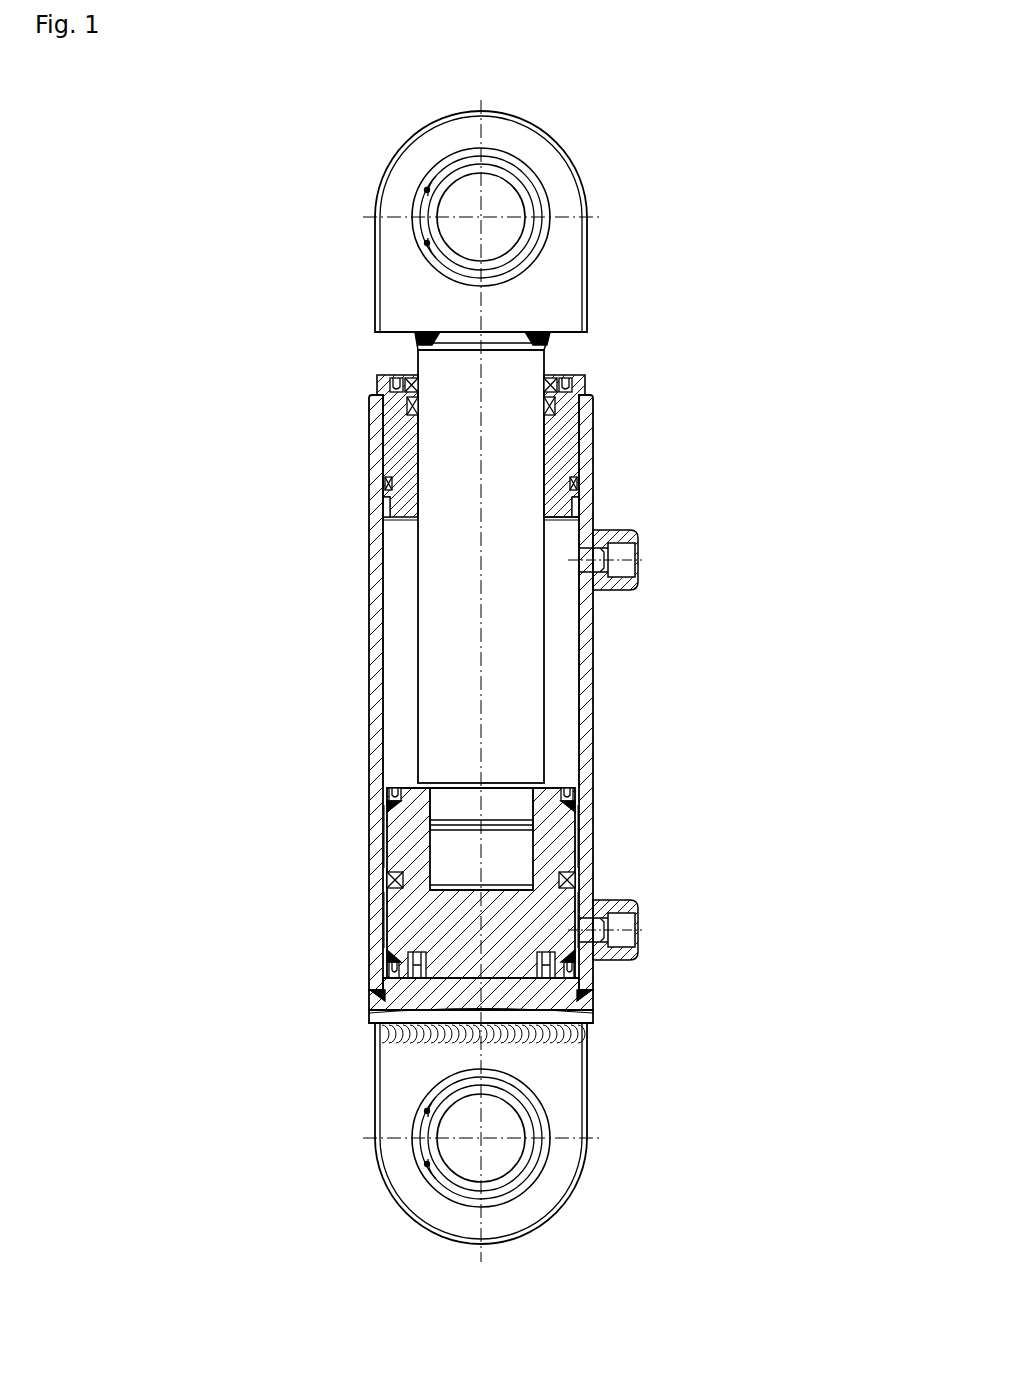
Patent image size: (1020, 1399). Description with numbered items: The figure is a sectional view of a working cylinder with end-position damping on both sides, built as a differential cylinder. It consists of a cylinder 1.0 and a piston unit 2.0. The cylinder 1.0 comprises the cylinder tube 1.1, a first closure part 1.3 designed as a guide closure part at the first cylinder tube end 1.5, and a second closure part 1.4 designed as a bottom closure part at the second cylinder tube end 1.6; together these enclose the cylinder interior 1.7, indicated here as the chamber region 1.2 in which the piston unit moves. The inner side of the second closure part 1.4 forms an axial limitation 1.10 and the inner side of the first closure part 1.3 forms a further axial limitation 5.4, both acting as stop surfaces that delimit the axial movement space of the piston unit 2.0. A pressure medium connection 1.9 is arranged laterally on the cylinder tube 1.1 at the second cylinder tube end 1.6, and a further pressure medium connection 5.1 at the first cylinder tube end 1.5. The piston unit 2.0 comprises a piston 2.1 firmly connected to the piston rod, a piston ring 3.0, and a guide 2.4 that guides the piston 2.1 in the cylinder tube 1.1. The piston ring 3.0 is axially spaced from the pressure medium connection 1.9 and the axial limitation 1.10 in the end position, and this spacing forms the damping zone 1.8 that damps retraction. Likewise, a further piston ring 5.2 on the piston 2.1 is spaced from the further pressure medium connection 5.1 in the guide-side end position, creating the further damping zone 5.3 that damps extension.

The cylinder 1.0 is at (297, 582).
The cylinder tube 1.1 is at (377, 648).
The cylinder chamber 1.2 is at (558, 705).
The first closure part 1.3 is at (400, 443).
The second closure part 1.4 is at (390, 1003).
The first cylinder tube end 1.5 is at (610, 408).
The second cylinder tube end 1.6 is at (602, 982).
The cylinder interior 1.7 is at (563, 640).
The damping zone 1.8 is at (355, 975).
The pressure medium connection 1.9 is at (630, 935).
The axial limitation 1.10 is at (503, 990).
The piston unit 2.0 is at (460, 795).
The piston 2.1 is at (420, 917).
The guide 2.4 is at (377, 872).
The piston ring 3.0 is at (570, 967).
The further pressure medium connection 5.1 is at (623, 560).
The further piston ring 5.2 is at (573, 798).
The further damping zone 5.3 is at (365, 562).
The further axial limitation 5.4 is at (553, 517).